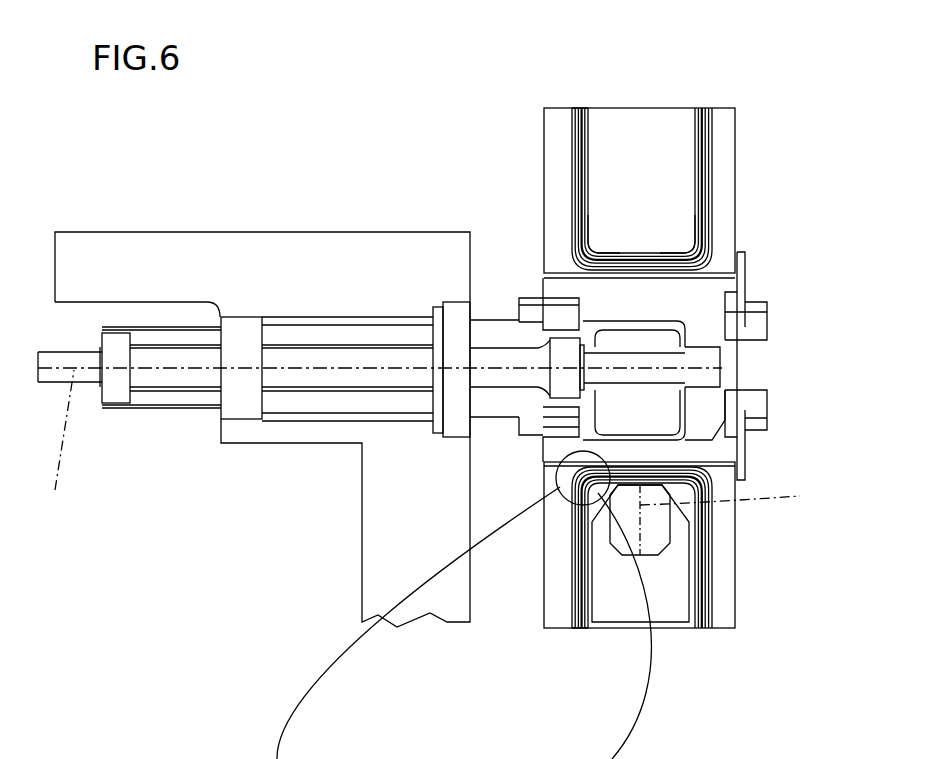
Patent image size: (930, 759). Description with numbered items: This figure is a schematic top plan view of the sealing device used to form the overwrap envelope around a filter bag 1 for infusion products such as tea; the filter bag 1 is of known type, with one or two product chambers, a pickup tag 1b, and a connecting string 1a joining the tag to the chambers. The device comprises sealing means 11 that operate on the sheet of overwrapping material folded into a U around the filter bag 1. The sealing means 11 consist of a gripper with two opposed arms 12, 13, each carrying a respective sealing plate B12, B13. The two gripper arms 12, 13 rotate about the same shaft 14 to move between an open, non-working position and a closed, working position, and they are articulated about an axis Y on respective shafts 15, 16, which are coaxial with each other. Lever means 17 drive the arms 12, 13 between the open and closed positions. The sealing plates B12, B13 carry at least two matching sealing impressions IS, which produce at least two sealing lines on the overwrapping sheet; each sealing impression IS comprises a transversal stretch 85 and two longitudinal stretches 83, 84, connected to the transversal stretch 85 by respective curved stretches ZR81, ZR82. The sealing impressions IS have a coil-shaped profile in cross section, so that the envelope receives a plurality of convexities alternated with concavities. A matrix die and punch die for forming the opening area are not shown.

The filter bag 1 is at (625, 607).
The connecting string 1a is at (720, 488).
The pickup tag 1b is at (658, 548).
The sealing means 11 is at (295, 205).
The gripper arm 12 is at (552, 282).
The gripper arm 13 is at (550, 453).
The shaft 14 is at (167, 362).
The shaft 15 is at (148, 398).
The shaft 16 is at (203, 337).
The lever means 17 is at (710, 313).
The longitudinal stretch 83 is at (578, 130).
The longitudinal stretch 84 is at (700, 118).
The transversal stretch 85 is at (658, 260).
The sealing plate B12 is at (720, 162).
The sealing plate B13 is at (722, 545).
The sealing impression IS is at (575, 98).
The curved stretch ZR81 is at (595, 238).
The curved stretch ZR82 is at (712, 262).
The axis Y is at (58, 451).